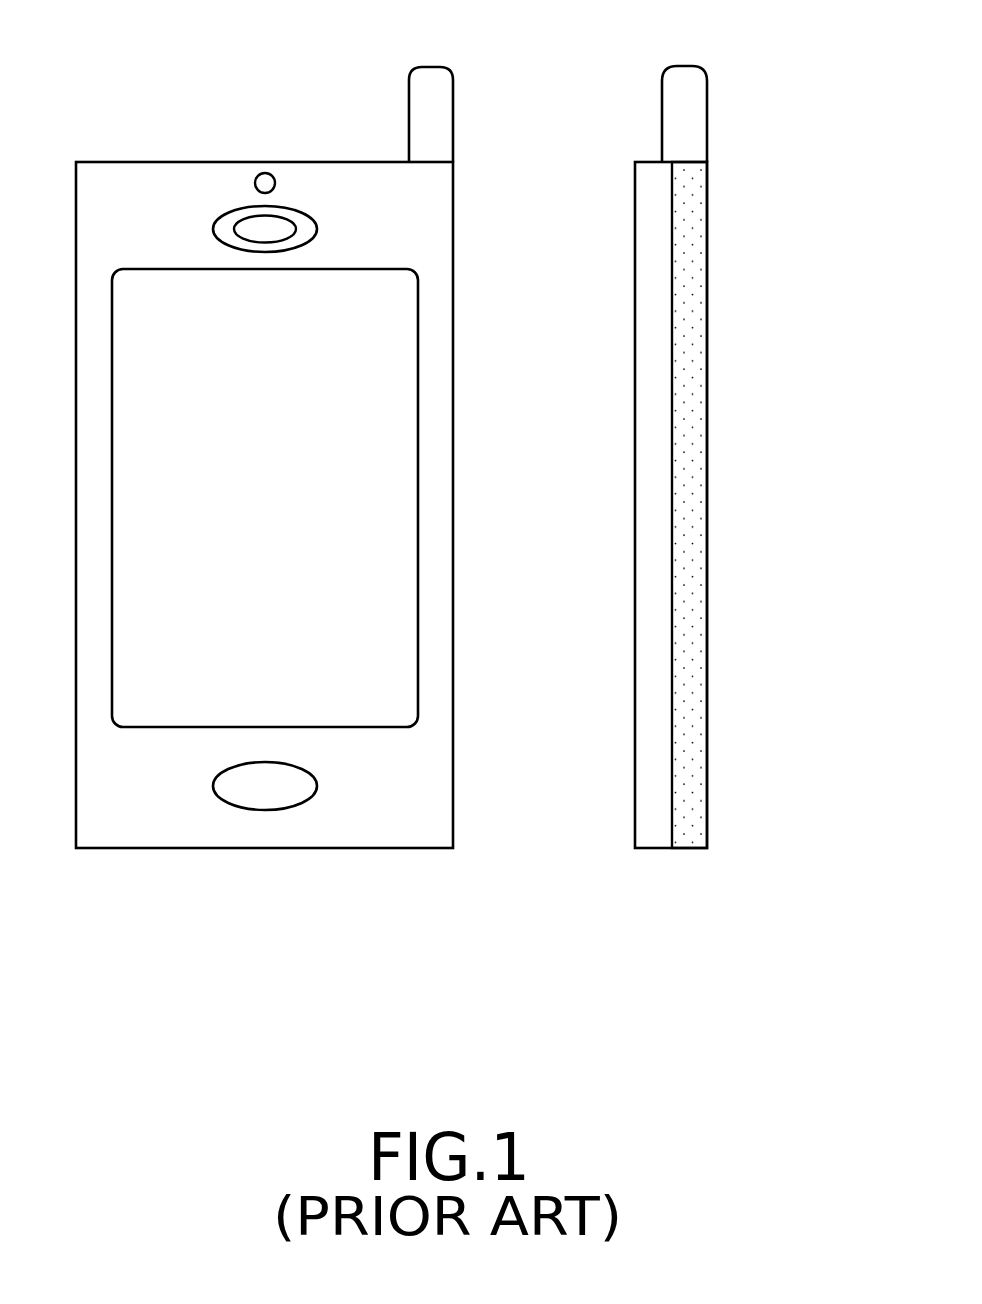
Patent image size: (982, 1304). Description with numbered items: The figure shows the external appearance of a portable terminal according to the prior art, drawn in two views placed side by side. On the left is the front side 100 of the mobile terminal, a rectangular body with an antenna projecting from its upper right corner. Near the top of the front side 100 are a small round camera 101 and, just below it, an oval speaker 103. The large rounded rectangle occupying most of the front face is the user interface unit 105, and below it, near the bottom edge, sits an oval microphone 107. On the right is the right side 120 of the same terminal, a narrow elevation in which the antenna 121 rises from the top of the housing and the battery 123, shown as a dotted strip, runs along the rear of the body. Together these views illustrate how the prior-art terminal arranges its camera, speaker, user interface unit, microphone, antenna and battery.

The front side 100 is at (265, 850).
The camera 101 is at (265, 172).
The speaker 103 is at (310, 230).
The user interface unit 105 is at (373, 532).
The microphone 107 is at (302, 788).
The right side 120 is at (672, 850).
The antenna 121 is at (695, 126).
The battery 123 is at (692, 516).